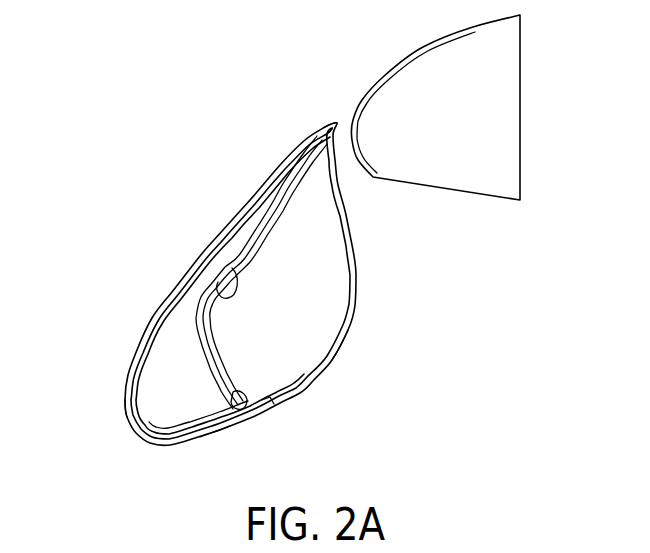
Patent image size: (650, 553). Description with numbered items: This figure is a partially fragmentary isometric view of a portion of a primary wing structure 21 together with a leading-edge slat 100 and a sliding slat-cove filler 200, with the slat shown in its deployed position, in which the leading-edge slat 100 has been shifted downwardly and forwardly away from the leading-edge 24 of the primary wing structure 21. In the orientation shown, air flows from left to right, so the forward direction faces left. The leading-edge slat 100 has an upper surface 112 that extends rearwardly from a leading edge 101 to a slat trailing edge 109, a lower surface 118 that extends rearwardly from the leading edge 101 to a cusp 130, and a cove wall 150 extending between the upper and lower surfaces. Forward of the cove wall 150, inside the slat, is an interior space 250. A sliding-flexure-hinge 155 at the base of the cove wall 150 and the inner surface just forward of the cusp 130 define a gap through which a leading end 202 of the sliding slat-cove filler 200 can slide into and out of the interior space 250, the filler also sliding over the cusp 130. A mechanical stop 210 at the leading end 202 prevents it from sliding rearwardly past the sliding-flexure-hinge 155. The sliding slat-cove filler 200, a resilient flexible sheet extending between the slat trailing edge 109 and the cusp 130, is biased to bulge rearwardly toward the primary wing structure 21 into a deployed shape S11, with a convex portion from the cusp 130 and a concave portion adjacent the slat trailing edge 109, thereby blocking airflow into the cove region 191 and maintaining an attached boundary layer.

The leading-edge slat 100 is at (117, 347).
The leading edge 101 is at (130, 422).
The slat trailing edge 109 is at (333, 120).
The upper surface 112 is at (170, 297).
The lower surface 118 is at (182, 443).
The cusp 130 is at (263, 403).
The cove wall 150 is at (230, 280).
The sliding-flexure-hinge 155 is at (243, 383).
The cove region 191 is at (320, 290).
The sliding slat-cove filler 200 is at (365, 325).
The leading end 202 is at (262, 400).
The mechanical stop 210 is at (213, 428).
The interior space 250 is at (192, 391).
The deployed shape S11 is at (325, 362).
The primary wing structure 21 is at (450, 178).
The leading-edge 24 is at (383, 83).